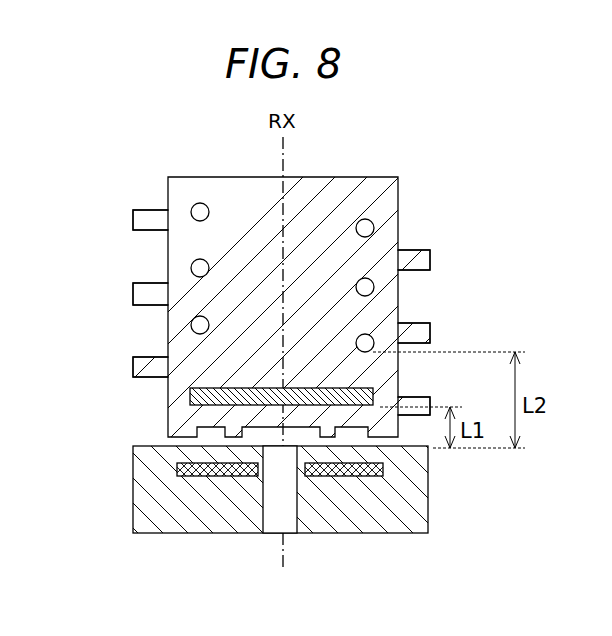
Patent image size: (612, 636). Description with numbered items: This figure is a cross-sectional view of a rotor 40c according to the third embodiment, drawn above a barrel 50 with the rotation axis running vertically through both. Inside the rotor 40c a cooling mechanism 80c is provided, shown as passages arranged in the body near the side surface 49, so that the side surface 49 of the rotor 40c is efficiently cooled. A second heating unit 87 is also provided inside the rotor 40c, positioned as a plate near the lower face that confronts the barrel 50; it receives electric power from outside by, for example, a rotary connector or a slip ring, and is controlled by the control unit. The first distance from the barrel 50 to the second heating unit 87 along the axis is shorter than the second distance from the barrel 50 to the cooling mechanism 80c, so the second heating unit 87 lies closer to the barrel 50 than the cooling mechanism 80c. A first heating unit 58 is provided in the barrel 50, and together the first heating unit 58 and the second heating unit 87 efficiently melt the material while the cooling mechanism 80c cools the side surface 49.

The rotor 40c is at (100, 170).
The side surface 49 is at (128, 270).
The cooling mechanism 80c is at (374, 343).
The second heating unit 87 is at (220, 388).
The barrel 50 is at (428, 492).
The first heating unit 58 is at (344, 477).